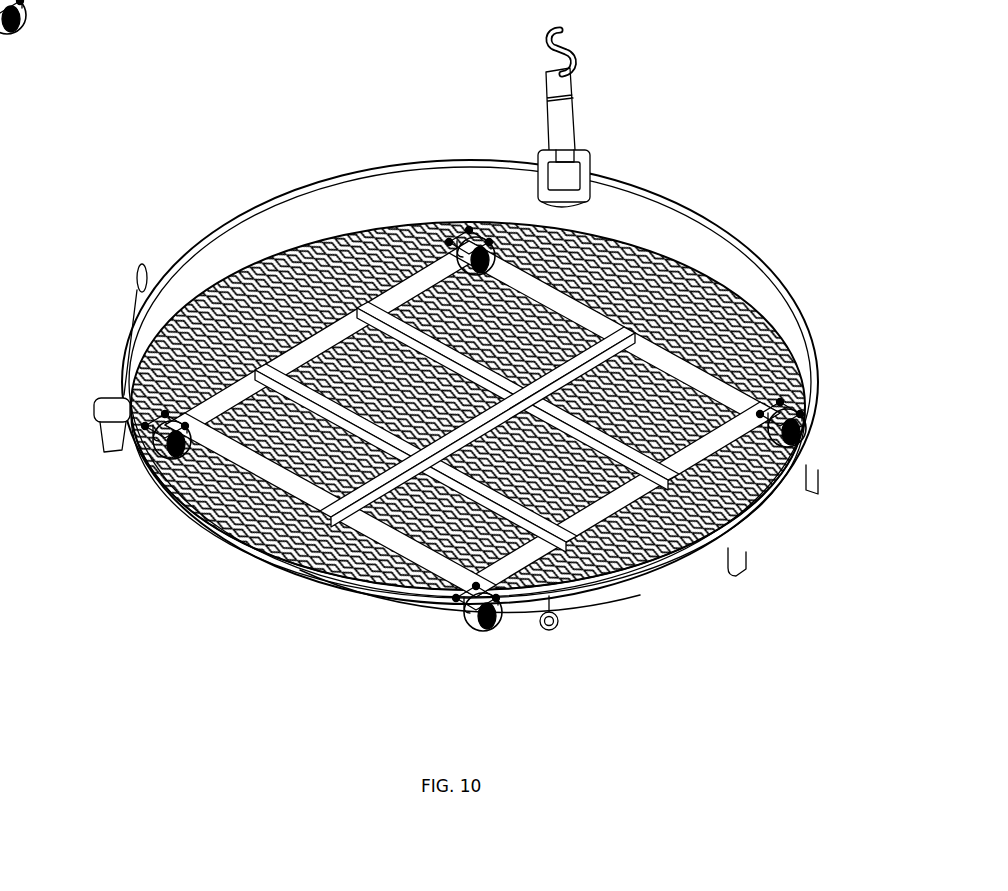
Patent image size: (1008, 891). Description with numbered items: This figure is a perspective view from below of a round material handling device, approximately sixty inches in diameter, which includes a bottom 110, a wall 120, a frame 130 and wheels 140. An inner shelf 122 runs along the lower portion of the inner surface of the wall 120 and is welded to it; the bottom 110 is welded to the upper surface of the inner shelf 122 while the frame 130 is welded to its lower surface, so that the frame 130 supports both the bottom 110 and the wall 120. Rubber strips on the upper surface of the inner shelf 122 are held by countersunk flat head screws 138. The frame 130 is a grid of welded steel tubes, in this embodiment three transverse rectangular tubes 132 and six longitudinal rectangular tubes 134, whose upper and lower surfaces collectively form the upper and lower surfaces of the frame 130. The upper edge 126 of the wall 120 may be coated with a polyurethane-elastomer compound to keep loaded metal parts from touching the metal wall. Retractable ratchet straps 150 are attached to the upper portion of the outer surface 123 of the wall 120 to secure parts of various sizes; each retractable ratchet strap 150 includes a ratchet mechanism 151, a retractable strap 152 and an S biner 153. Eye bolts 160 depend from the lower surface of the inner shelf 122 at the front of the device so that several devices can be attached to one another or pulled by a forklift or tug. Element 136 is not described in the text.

The bottom 110 is at (667, 327).
The wall 120 is at (470, 367).
The inner shelf 122 is at (620, 580).
The outer surface 123 is at (396, 205).
The upper edge 126 is at (470, 367).
The frame 130 is at (470, 389).
The transverse rectangular tubes 132 is at (682, 548).
The longitudinal rectangular tubes 134 is at (230, 460).
The cross beams 136 is at (230, 533).
The countersunk flat head screws 138 is at (367, 490).
The wheels 140 is at (800, 445).
The retractable ratchet straps 150 is at (351, 241).
The ratchet mechanism 151 is at (594, 170).
The retractable strap 152 is at (580, 92).
The S biner 153 is at (545, 52).
The eye bolts 160 is at (805, 478).